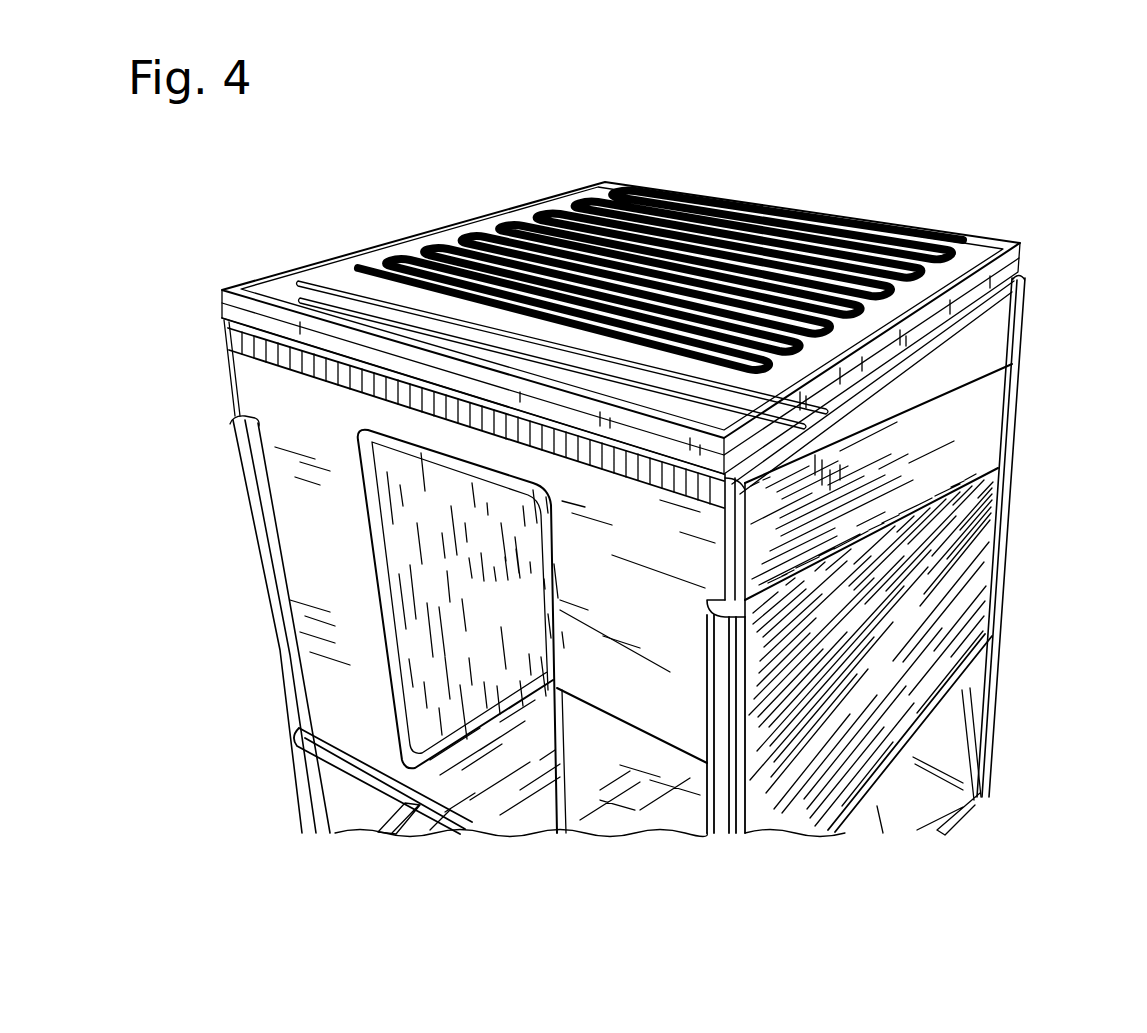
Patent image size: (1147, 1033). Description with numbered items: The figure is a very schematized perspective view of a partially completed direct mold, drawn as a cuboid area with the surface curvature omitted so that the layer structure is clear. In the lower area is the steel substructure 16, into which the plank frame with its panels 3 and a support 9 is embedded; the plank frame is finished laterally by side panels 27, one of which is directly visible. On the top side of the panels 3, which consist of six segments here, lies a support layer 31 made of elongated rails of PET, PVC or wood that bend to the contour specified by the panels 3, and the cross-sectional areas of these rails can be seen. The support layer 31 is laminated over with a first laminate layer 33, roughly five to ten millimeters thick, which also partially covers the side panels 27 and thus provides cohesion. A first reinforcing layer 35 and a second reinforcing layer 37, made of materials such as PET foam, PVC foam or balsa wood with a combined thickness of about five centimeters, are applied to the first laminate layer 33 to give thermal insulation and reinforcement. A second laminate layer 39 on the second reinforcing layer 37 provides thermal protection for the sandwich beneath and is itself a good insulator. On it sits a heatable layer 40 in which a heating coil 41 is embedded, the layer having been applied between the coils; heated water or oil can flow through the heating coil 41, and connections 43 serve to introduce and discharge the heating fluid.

The panels 3 is at (325, 660).
The support 9 is at (407, 590).
The steel substructure 16 is at (296, 790).
The side panels 27 is at (945, 572).
The support layer 31 is at (258, 352).
The first laminate layer 33 is at (292, 340).
The first reinforcing layer 35 is at (224, 313).
The second reinforcing layer 37 is at (222, 292).
The second laminate layer 39 is at (266, 284).
The heatable layer 40 is at (942, 222).
The heating coil 41 is at (541, 208).
The connections 43 is at (830, 408).